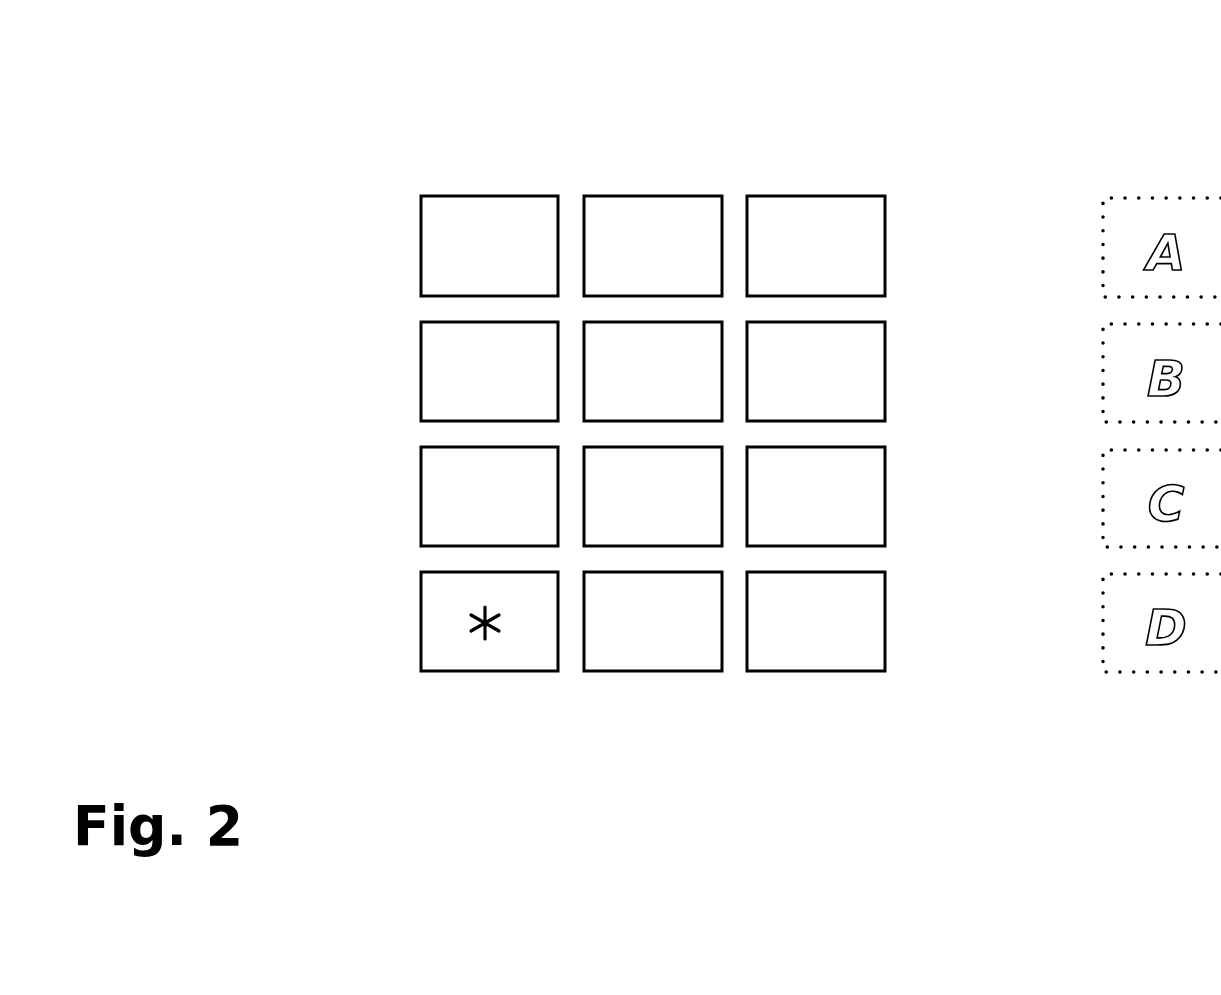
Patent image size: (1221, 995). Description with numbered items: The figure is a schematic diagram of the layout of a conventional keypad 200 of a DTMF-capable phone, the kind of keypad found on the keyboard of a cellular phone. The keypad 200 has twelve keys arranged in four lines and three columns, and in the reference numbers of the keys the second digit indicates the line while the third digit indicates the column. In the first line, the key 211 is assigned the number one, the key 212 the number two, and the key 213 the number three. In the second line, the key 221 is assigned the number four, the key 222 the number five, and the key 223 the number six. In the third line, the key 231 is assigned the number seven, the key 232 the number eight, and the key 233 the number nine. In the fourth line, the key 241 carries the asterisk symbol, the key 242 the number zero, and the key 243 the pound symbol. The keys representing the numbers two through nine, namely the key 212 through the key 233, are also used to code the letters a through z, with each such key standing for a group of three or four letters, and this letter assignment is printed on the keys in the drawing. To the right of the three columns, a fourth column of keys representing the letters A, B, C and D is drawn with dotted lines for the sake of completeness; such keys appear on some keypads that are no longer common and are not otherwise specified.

The keypad 200 is at (944, 165).
The key 211 is at (466, 196).
The key 212 is at (618, 196).
The key 213 is at (805, 196).
The key 221 is at (421, 368).
The key 222 is at (722, 322).
The key 223 is at (886, 357).
The key 231 is at (421, 508).
The key 232 is at (721, 447).
The key 233 is at (886, 518).
The key 241 is at (460, 671).
The key 242 is at (645, 671).
The key 243 is at (838, 671).